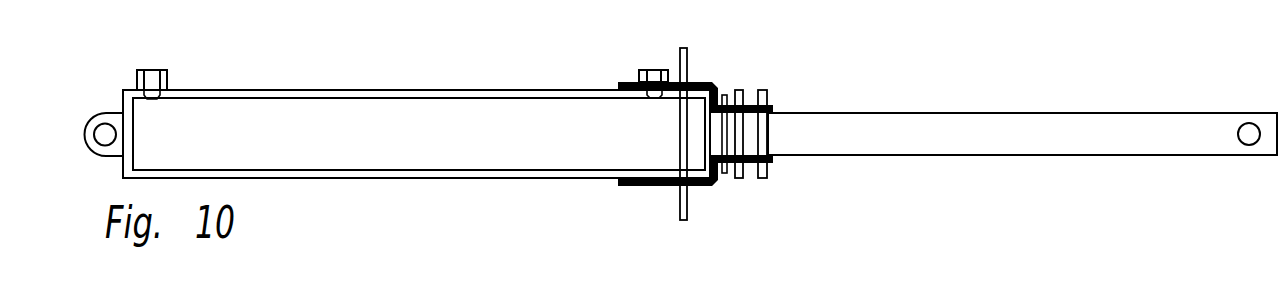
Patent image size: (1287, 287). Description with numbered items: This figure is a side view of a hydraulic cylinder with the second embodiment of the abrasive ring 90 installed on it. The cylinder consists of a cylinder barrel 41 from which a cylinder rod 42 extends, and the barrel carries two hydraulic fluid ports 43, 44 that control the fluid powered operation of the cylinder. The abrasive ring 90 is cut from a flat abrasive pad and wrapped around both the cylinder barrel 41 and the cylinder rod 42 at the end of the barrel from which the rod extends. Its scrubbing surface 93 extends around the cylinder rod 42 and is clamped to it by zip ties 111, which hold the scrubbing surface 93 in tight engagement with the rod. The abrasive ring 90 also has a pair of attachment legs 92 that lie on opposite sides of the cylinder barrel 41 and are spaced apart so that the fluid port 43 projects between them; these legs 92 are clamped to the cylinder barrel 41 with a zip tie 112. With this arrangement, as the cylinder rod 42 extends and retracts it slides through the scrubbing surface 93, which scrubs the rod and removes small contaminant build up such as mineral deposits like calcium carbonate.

The cylinder barrel 41 is at (451, 90).
The cylinder rod 42 is at (873, 113).
The hydraulic fluid port 43 is at (652, 70).
The hydraulic fluid port 44 is at (152, 70).
The abrasive ring 90 is at (737, 90).
The attachment legs 92 is at (698, 82).
The scrubbing surface 93 is at (768, 133).
The zip ties 111 is at (776, 187).
The zip tie 112 is at (687, 212).